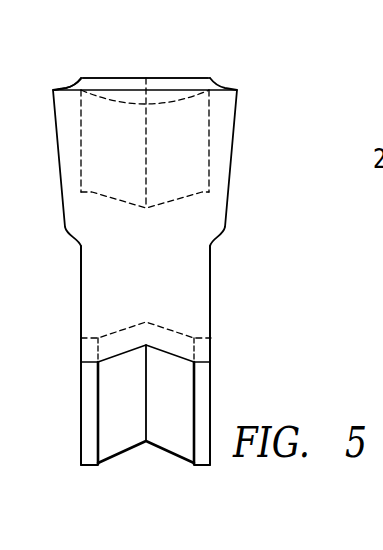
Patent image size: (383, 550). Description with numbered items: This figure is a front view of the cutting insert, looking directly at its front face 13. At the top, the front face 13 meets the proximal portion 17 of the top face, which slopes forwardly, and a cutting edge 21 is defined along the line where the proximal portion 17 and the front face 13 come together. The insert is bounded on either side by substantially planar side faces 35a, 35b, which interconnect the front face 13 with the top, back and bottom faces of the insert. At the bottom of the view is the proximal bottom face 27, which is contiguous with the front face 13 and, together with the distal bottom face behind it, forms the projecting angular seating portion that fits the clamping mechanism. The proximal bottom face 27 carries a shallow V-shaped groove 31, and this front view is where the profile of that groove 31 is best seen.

The front face 13 is at (157, 276).
The proximal portion of the top face 17 is at (149, 83).
The cutting edge 21 is at (103, 91).
The proximal bottom face 27 is at (174, 437).
The V-shaped groove 31 is at (146, 423).
The side face 35a is at (210, 295).
The side face 35b is at (81, 302).